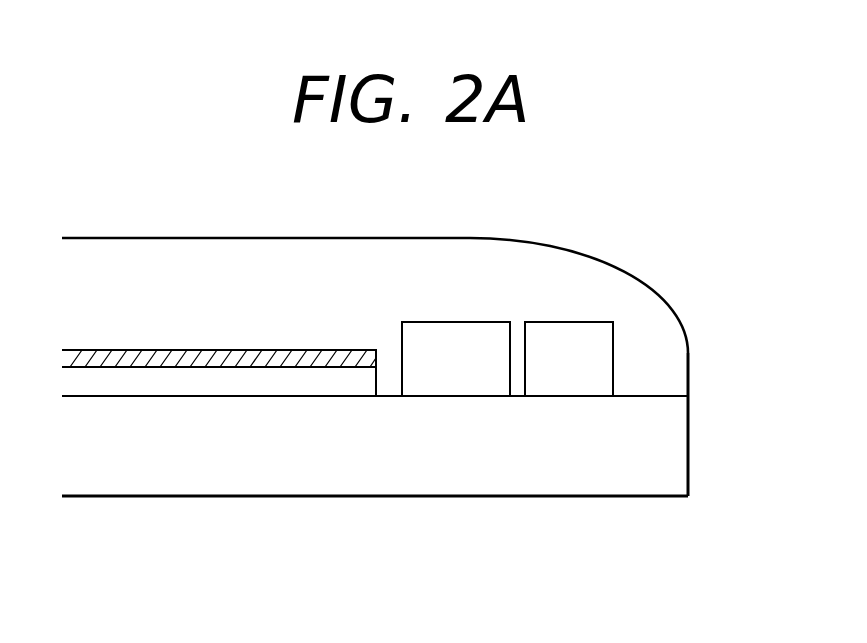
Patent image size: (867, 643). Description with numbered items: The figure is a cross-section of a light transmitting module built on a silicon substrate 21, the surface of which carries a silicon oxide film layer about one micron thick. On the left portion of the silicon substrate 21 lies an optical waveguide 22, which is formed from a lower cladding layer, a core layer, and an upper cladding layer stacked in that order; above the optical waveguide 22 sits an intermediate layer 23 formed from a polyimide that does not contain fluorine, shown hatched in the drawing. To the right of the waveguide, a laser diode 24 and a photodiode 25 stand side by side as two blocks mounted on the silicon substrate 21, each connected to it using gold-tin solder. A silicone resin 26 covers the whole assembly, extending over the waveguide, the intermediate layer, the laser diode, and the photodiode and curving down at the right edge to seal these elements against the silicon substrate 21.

The silicon substrate 21 is at (667, 431).
The optical waveguide 22 is at (267, 380).
The intermediate layer 23 is at (343, 360).
The laser diode 24 is at (473, 334).
The photodiode 25 is at (571, 334).
The silicone resin 26 is at (453, 250).